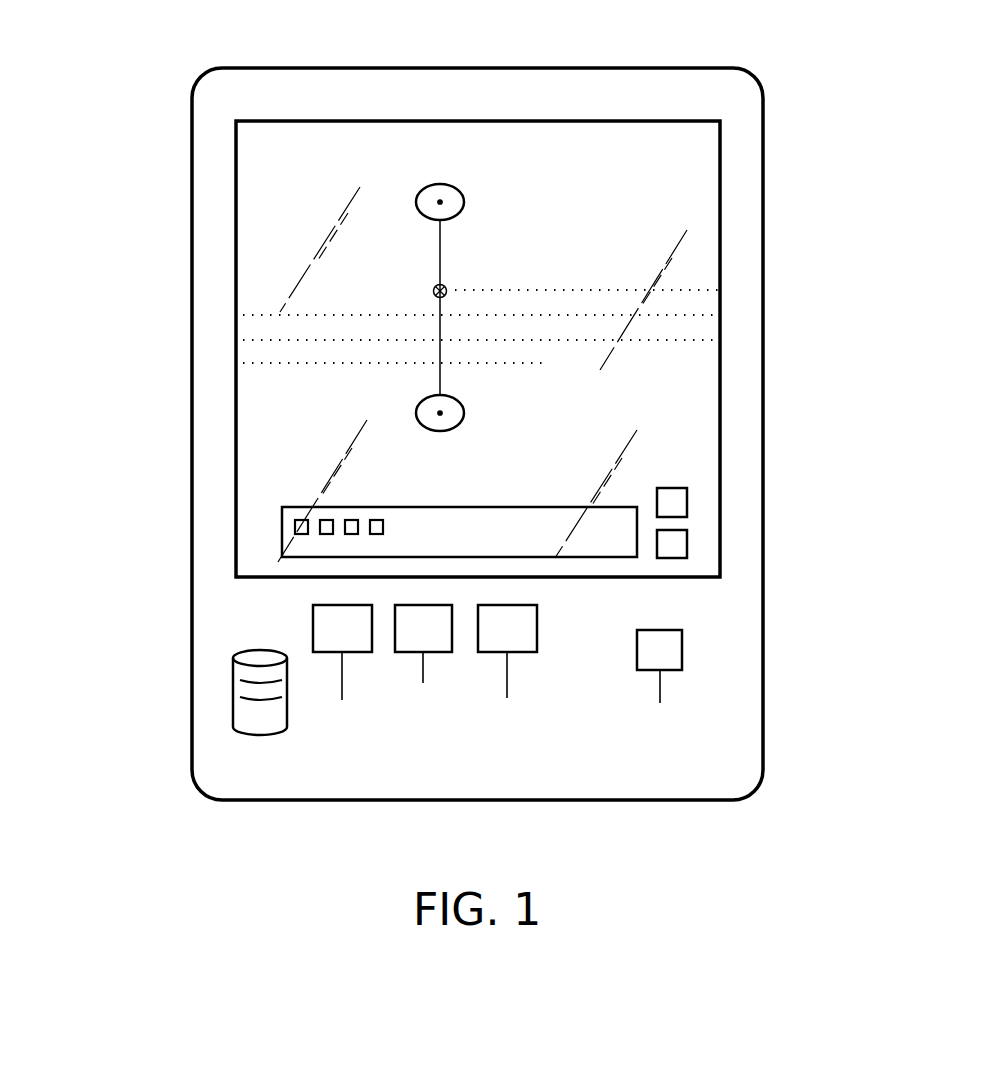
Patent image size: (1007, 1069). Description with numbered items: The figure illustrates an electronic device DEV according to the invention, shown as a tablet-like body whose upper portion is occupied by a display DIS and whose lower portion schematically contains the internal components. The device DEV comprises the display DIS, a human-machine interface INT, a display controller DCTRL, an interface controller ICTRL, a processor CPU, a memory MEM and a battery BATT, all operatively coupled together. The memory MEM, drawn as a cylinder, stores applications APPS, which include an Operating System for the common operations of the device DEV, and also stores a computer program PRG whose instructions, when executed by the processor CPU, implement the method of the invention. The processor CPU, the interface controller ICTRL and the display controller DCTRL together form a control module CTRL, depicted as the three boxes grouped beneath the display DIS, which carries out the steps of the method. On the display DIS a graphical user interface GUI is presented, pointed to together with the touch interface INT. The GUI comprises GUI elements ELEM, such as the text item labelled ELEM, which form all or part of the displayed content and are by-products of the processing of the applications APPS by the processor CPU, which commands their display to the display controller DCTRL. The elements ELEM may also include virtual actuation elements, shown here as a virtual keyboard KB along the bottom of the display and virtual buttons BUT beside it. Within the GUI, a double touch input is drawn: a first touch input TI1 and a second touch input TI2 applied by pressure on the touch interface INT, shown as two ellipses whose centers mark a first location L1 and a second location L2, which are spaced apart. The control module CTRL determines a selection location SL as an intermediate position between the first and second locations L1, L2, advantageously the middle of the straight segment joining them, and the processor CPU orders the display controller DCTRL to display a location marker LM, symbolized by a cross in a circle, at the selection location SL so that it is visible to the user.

The electronic device DEV is at (167, 413).
The display DIS is at (722, 380).
The human-machine interface INT is at (642, 210).
The graphical user interface GUI is at (577, 212).
The selection location SL is at (433, 282).
The first touch input TI1 is at (459, 183).
The second touch input TI2 is at (404, 420).
The first location L1 is at (440, 202).
The second location L2 is at (440, 413).
The location marker LM is at (445, 287).
The GUI element ELEM is at (553, 370).
The virtual buttons BUT is at (668, 483).
The virtual keyboard KB is at (438, 523).
The memory MEM is at (191, 692).
The computer program PRG is at (263, 682).
The applications APPS is at (265, 702).
The control module CTRL is at (401, 736).
The display controller DCTRL is at (336, 666).
The interface controller ICTRL is at (419, 656).
The processor CPU is at (507, 666).
The battery BATT is at (653, 681).